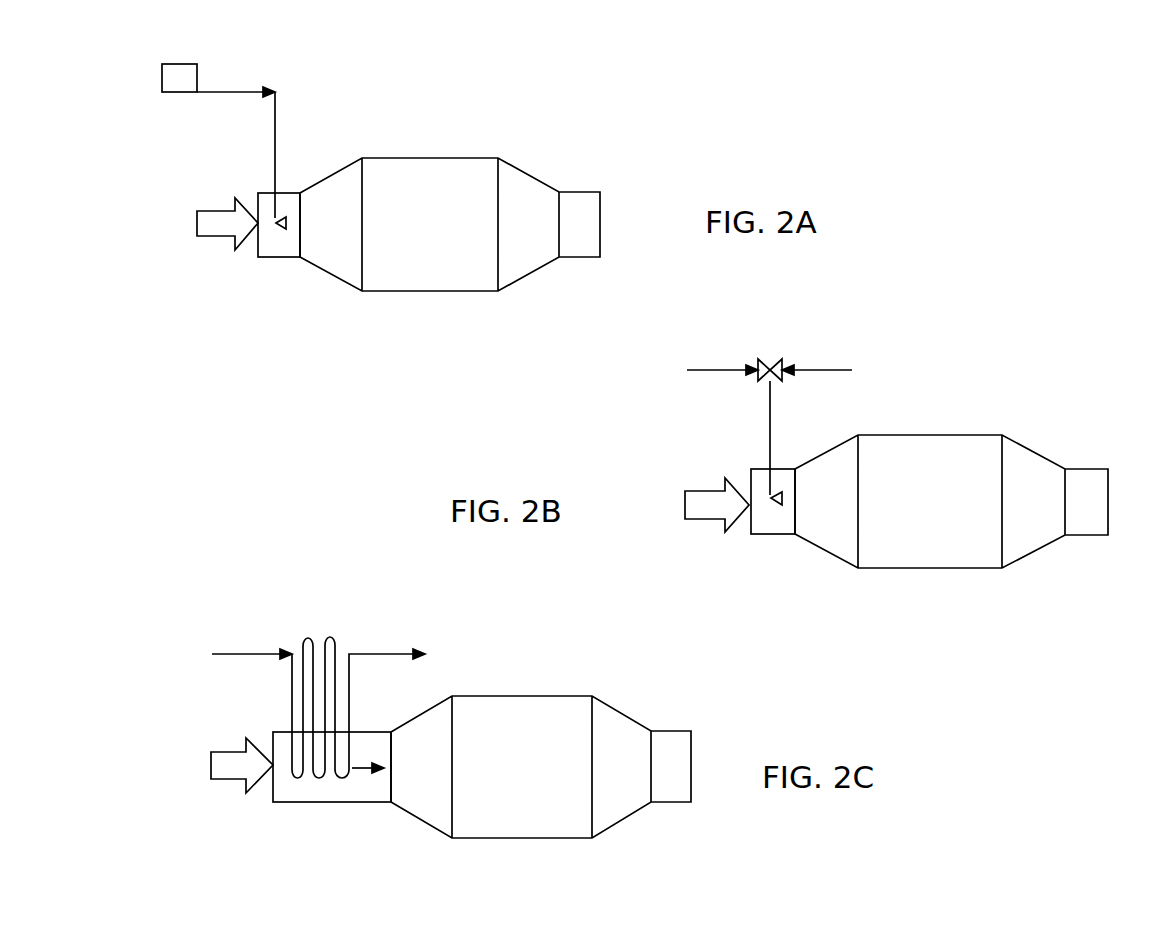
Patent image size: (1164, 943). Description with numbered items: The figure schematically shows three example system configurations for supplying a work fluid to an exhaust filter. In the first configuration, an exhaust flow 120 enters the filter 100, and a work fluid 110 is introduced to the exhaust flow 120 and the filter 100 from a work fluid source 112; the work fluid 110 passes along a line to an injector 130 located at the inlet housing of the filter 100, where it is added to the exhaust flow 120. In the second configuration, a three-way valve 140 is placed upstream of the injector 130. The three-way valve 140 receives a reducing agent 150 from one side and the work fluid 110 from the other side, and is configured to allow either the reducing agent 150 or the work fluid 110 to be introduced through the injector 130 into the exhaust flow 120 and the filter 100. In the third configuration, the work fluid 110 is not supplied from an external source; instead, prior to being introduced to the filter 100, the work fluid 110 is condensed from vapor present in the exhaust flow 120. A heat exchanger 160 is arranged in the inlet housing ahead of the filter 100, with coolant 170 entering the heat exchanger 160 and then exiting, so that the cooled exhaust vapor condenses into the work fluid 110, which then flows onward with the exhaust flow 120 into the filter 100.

In FIG. 2A, the filter 100 is at (408, 253).
In FIG. 2B, the filter 100 is at (925, 525).
In FIG. 2C, the filter 100 is at (499, 738).
In FIG. 2A, the work fluid 110 is at (223, 93).
In FIG. 2B, the work fluid 110 is at (823, 370).
In FIG. 2C, the work fluid 110 is at (363, 773).
In FIG. 2A, the work fluid source 112 is at (207, 79).
In FIG. 2A, the exhaust flow 120 is at (218, 220).
In FIG. 2B, the exhaust flow 120 is at (712, 502).
In FIG. 2C, the exhaust flow 120 is at (227, 772).
In FIG. 2A, the injector 130 is at (280, 227).
In FIG. 2B, the injector 130 is at (777, 505).
In FIG. 2B, the three-way valve 140 is at (773, 361).
In FIG. 2B, the reducing agent 150 is at (712, 370).
In FIG. 2C, the heat exchanger 160 is at (319, 670).
In FIG. 2C, the coolant 170 is at (240, 652).